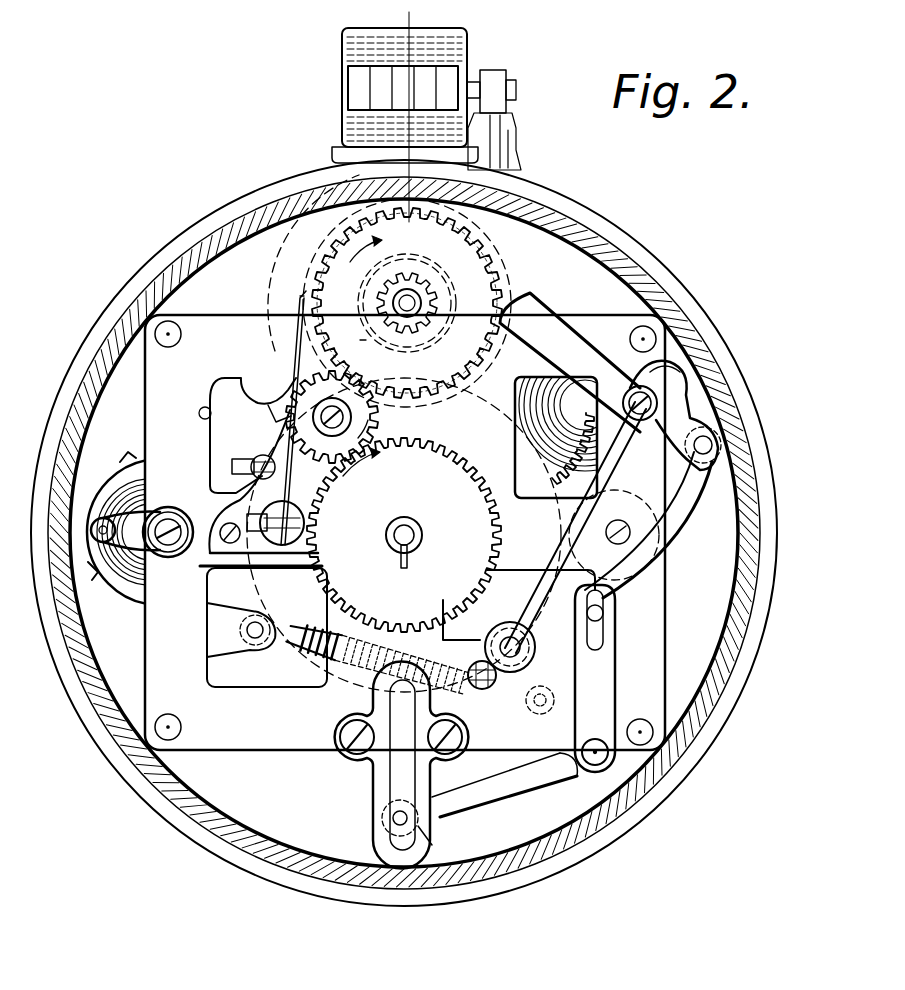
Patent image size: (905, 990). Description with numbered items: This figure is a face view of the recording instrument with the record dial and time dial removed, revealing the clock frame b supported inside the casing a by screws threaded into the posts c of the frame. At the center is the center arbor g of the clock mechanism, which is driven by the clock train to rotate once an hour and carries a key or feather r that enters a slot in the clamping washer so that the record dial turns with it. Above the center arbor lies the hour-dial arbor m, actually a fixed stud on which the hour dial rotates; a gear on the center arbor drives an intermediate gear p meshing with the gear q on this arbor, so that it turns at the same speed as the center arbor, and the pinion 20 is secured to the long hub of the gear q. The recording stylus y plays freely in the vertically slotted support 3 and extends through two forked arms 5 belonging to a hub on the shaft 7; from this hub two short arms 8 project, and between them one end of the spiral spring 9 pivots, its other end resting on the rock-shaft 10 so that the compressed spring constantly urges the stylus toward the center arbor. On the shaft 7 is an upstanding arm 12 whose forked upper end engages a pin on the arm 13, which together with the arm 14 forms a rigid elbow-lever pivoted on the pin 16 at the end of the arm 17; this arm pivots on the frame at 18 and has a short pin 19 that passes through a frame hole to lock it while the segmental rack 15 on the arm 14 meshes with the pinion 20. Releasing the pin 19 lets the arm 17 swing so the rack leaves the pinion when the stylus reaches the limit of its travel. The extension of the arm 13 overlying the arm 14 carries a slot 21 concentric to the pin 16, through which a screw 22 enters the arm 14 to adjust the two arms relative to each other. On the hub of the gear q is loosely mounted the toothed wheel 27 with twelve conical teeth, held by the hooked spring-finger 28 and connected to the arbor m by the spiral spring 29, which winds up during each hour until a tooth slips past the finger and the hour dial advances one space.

The casing a is at (74, 393).
The frame b is at (146, 404).
The posts c is at (160, 333).
The vertically slotted support 3 is at (400, 942).
The forked arms 5 is at (511, 795).
The shaft 7 is at (589, 766).
The short arms 8 is at (511, 703).
The spiral spring 9 is at (308, 660).
The rock-shaft 10 is at (262, 638).
The upstanding arm 12 is at (600, 675).
The arm 13 is at (650, 565).
The arm 14 is at (582, 360).
The segmental rack 15 is at (466, 222).
The pin 16 is at (706, 442).
The arm 17 is at (685, 520).
The pivot 18 is at (606, 530).
The short pin 19 is at (484, 658).
The pinion 20 is at (418, 272).
The slot 21 is at (682, 378).
The screw 22 is at (632, 419).
The toothed wheel 27 is at (328, 302).
The spring-finger 28 is at (297, 336).
The spiral spring 29 is at (359, 353).
The hour-dial arbor m is at (404, 300).
The center arbor g is at (372, 234).
The intermediate gear p is at (378, 420).
The main gear o is at (404, 535).
The gear q is at (412, 536).
The key or feather r is at (408, 560).
The stylus y is at (416, 828).